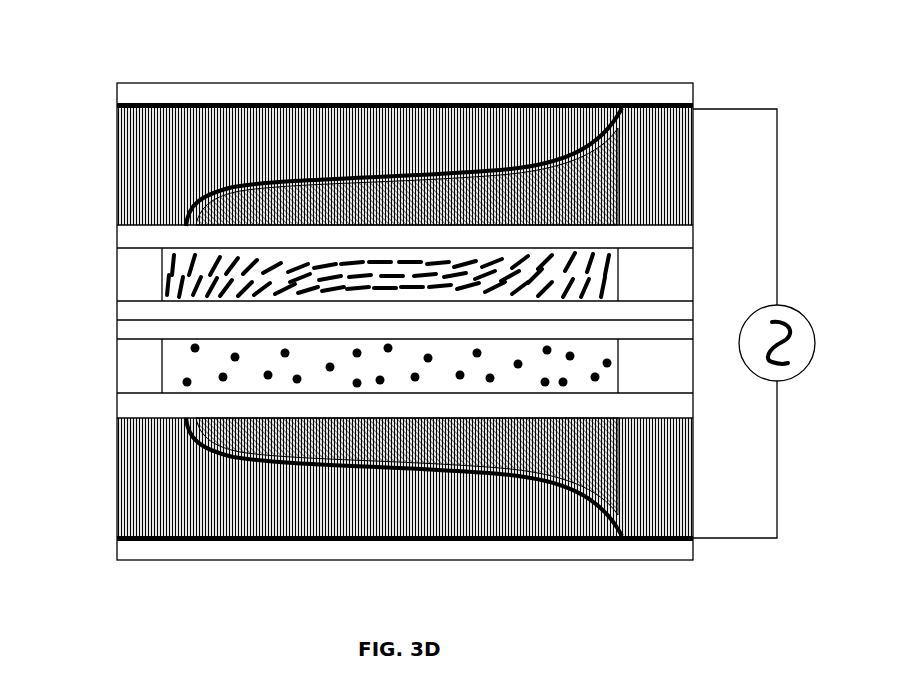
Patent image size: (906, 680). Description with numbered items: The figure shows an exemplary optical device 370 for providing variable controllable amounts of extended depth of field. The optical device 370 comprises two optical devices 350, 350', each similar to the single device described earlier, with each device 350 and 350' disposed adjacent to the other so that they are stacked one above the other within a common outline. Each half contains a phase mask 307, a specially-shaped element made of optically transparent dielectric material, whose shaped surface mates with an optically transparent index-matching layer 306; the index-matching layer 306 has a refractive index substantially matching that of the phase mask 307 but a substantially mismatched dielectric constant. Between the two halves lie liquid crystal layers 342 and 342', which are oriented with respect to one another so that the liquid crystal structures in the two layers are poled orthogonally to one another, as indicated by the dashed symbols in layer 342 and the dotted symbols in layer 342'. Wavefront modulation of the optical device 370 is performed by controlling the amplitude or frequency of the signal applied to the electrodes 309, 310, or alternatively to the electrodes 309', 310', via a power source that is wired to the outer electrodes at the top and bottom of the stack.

The optical device 370 is at (343, 30).
The index-matching layer 306 is at (437, 123).
The electrode 310 is at (405, 83).
The electrode 310' is at (437, 167).
The phase mask 307 is at (613, 198).
The liquid crystal layer 342 is at (405, 274).
The liquid crystal layer 342' is at (405, 366).
The optical device 350 is at (364, 284).
The optical device 350' is at (363, 468).
The electrode 309 is at (405, 574).
The electrode 309' is at (404, 511).